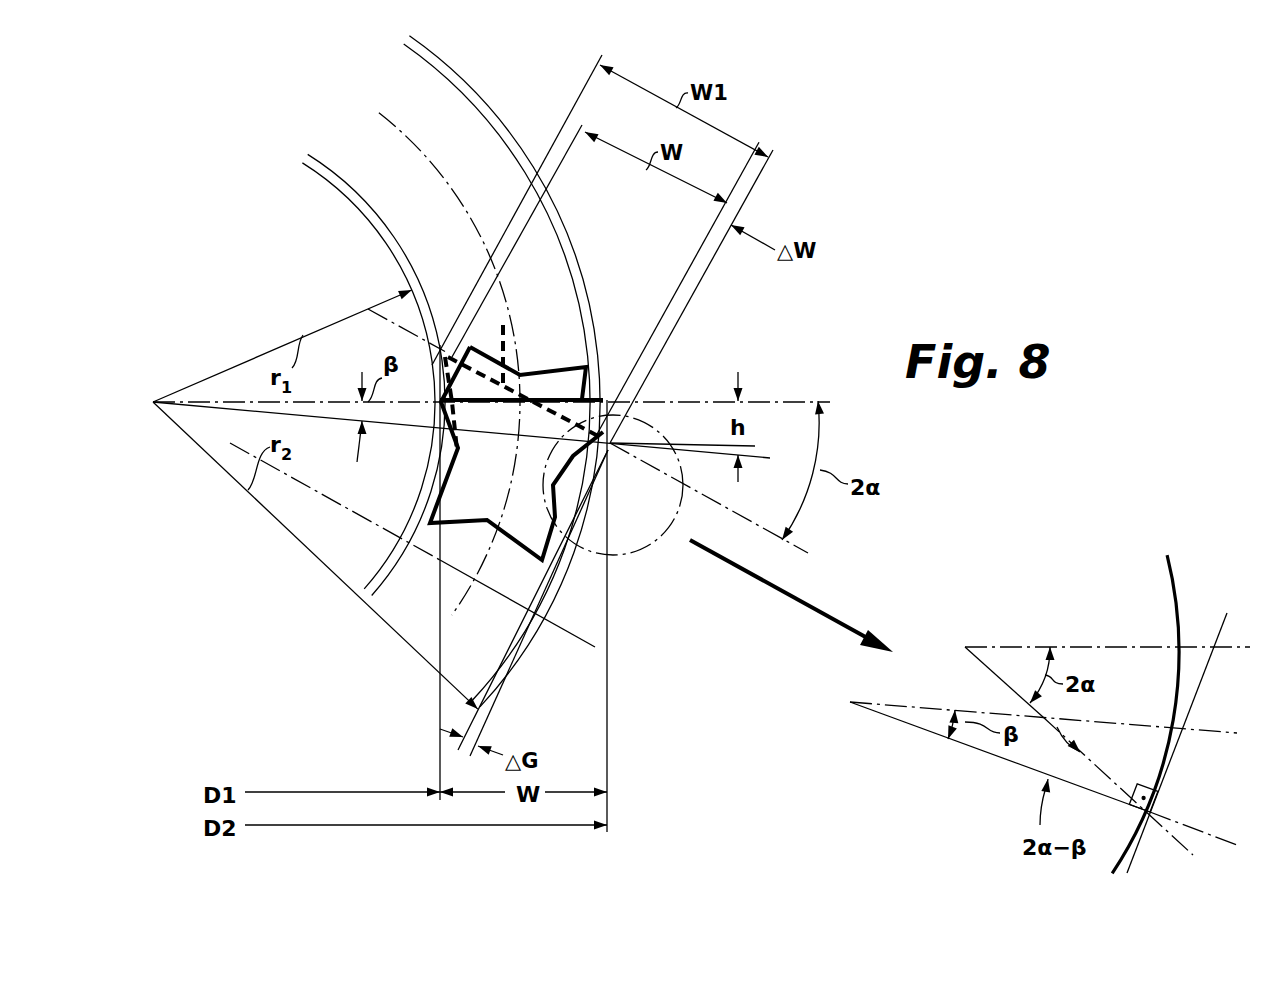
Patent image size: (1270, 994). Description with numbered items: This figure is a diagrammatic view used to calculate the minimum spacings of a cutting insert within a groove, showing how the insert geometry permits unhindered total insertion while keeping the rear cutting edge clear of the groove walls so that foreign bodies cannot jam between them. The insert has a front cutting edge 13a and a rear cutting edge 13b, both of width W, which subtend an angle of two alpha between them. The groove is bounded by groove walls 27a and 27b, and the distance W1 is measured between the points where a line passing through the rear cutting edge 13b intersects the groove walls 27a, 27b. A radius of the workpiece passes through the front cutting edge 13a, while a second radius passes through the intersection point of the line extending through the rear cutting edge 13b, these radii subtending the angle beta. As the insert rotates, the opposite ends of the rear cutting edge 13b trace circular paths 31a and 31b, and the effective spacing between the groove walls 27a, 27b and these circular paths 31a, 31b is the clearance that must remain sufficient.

The front cutting edge 13a is at (543, 387).
The rear cutting edge 13b is at (504, 331).
The groove wall 27a is at (360, 212).
The groove wall 27b is at (470, 90).
The circular path 31a is at (373, 207).
The circular path 31b is at (458, 90).